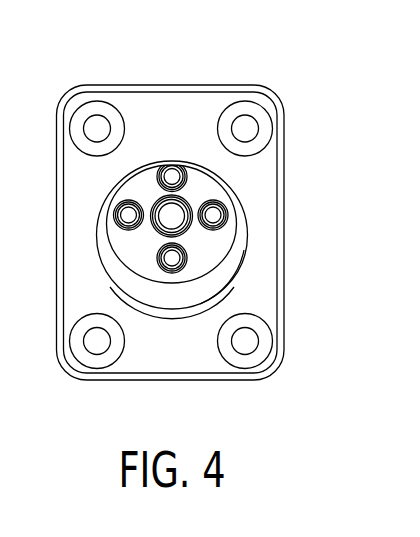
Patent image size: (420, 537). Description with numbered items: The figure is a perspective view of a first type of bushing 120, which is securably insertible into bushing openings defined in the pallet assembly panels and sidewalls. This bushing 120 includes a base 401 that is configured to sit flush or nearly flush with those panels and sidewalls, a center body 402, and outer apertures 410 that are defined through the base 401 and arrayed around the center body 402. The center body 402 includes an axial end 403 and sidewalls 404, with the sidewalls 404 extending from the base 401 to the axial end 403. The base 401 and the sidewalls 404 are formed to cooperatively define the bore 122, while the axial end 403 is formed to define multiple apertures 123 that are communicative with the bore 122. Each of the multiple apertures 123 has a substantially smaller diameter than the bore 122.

The bushing 120 is at (66, 102).
The base 401 is at (167, 110).
The outer apertures 410 is at (97, 128).
The axial end 403 is at (137, 187).
The apertures 123 is at (182, 174).
The center body 402 is at (107, 273).
The bore 122 is at (213, 275).
The sidewalls 404 is at (166, 287).